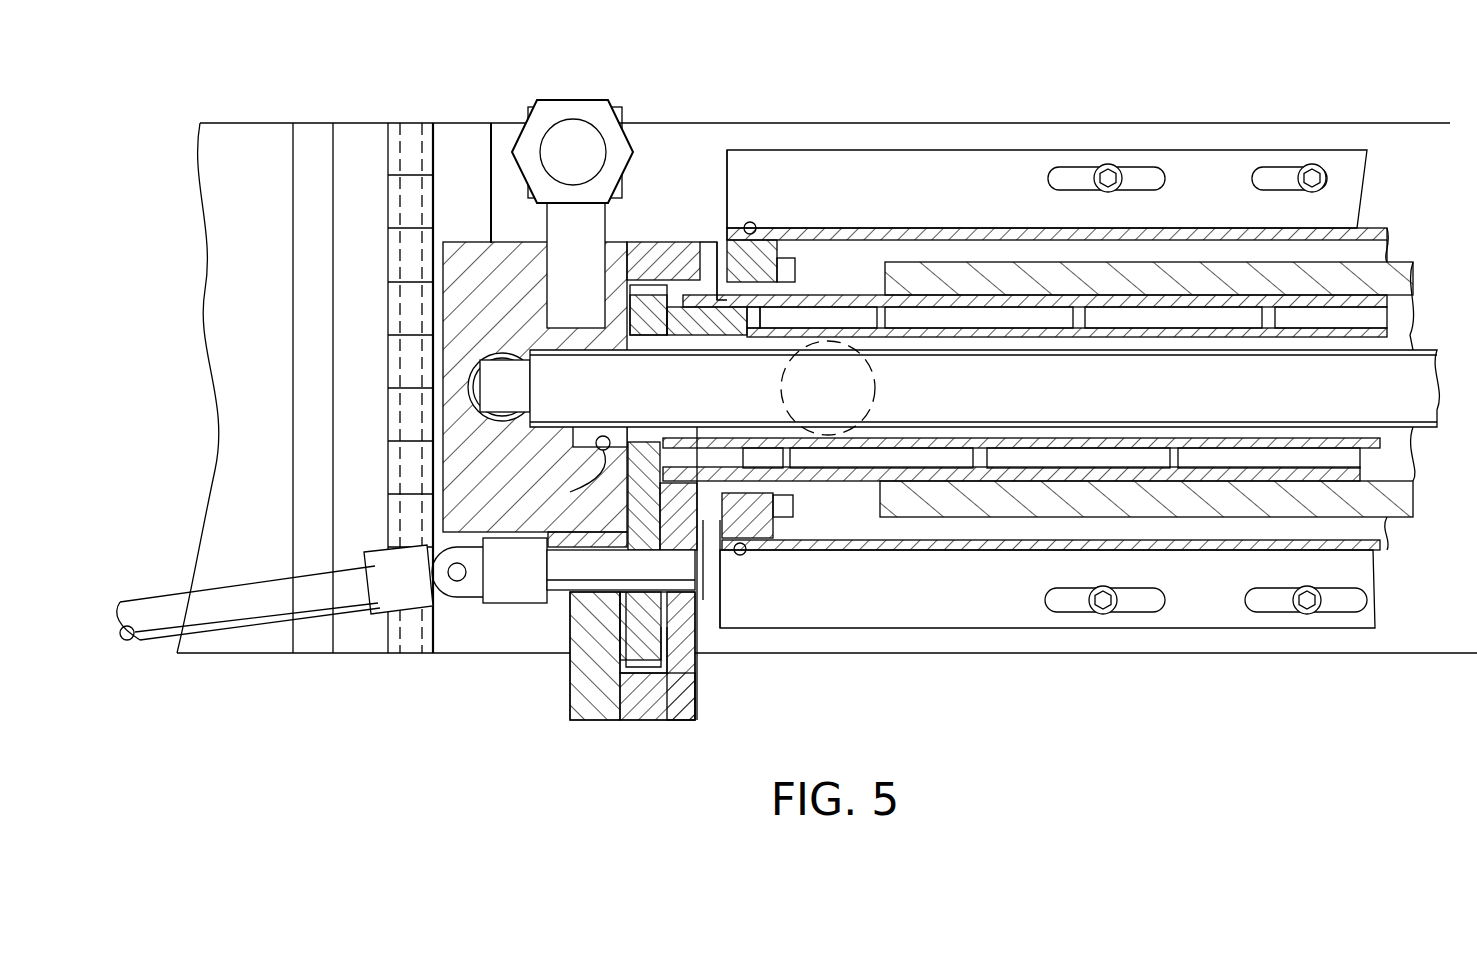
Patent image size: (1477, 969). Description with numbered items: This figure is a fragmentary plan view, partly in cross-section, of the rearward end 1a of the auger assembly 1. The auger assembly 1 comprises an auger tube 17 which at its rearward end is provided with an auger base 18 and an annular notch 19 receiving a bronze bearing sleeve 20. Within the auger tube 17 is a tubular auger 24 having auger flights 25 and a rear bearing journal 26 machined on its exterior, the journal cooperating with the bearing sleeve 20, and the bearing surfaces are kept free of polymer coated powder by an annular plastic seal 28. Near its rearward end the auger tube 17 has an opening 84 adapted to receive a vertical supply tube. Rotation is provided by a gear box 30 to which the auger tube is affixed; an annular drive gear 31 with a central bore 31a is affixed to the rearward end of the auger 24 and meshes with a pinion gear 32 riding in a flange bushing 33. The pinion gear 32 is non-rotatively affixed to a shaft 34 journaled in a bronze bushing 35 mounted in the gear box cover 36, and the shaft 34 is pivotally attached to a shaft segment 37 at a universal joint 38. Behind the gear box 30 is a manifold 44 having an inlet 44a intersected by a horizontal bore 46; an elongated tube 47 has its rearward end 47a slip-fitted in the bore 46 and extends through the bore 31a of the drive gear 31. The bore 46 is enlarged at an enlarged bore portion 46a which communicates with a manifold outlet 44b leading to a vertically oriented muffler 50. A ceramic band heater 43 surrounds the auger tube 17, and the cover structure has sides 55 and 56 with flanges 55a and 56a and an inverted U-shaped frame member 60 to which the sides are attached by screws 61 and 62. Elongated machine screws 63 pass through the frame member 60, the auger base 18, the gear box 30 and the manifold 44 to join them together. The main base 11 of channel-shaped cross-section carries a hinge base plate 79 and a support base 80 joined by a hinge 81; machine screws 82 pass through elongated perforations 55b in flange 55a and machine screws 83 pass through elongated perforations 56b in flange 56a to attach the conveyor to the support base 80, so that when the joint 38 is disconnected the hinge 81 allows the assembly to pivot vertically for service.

The auger assembly 1 is at (1218, 618).
The rearward end 1a is at (420, 108).
The channel member 11 is at (258, 133).
The auger tube 17 is at (1043, 300).
The auger base 18 is at (717, 240).
The annular notch 19 is at (717, 300).
The bronze bearing sleeve 20 is at (760, 483).
The tubular auger 24 is at (1160, 338).
The auger flights 25 is at (1185, 455).
The rear bearing journal 26 is at (735, 336).
The annular plastic seal 28 is at (760, 320).
The gear box 30 is at (640, 255).
The drive gear 31 is at (652, 320).
The central bore 31a is at (660, 440).
The pinion gear 32 is at (643, 665).
The flange bushing 33 is at (695, 635).
The shaft 34 is at (568, 572).
The bronze bushing 35 is at (585, 625).
The gear box cover 36 is at (572, 702).
The shaft segment 37 is at (268, 585).
The universal joint 38 is at (448, 572).
The ceramic band heater 43 is at (1405, 268).
The manifold 44 is at (458, 243).
The inlet 44a is at (545, 385).
The manifold outlet 44b is at (565, 292).
The horizontal bore 46 is at (512, 418).
The enlarged bore portion 46a is at (602, 452).
The elongated tube 47 is at (1030, 358).
The rearward end 47a is at (573, 432).
The muffler 50 is at (583, 105).
The side 55 is at (1193, 232).
The flange 55a is at (1200, 165).
The elongated perforations 55b is at (1072, 165).
The side 56 is at (1165, 550).
The flange 56a is at (948, 608).
The elongated perforations 56b is at (1063, 612).
The inverted U-shaped frame member 60 is at (768, 260).
The screw 61 is at (752, 222).
The screw 62 is at (745, 556).
The elongated machine screw 63 is at (790, 270).
The hinge base plate 79 is at (307, 235).
The support base 80 is at (1450, 123).
The hinge 81 is at (365, 360).
The machine screw 82 is at (1108, 165).
The machine screw 83 is at (1100, 612).
The opening 84 is at (875, 402).